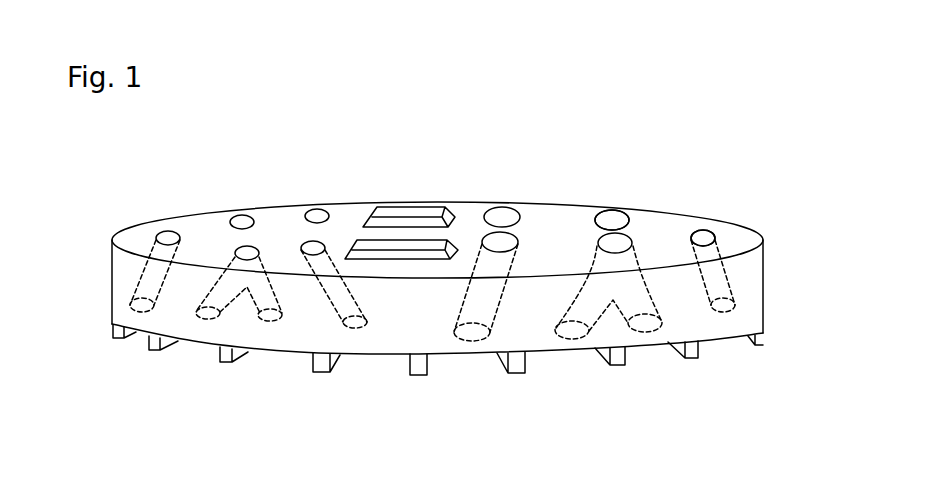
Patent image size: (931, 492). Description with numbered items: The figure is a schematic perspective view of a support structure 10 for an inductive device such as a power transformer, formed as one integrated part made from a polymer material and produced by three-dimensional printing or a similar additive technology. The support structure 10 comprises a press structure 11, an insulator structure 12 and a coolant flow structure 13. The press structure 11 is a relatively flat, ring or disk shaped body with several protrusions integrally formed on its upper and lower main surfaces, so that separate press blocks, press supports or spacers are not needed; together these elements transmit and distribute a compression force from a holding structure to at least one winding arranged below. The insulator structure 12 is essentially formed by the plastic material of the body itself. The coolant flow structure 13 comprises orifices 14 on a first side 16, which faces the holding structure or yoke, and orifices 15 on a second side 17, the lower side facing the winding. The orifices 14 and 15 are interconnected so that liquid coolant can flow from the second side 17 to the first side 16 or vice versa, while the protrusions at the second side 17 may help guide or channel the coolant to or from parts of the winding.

The support structure 10 is at (690, 88).
The press structure 11 is at (787, 208).
The insulator structure 12 is at (72, 243).
The coolant flow structure 13 is at (350, 172).
The orifices 14 is at (612, 212).
The orifices 15 is at (473, 341).
The first side 16 is at (465, 208).
The second side 17 is at (538, 353).